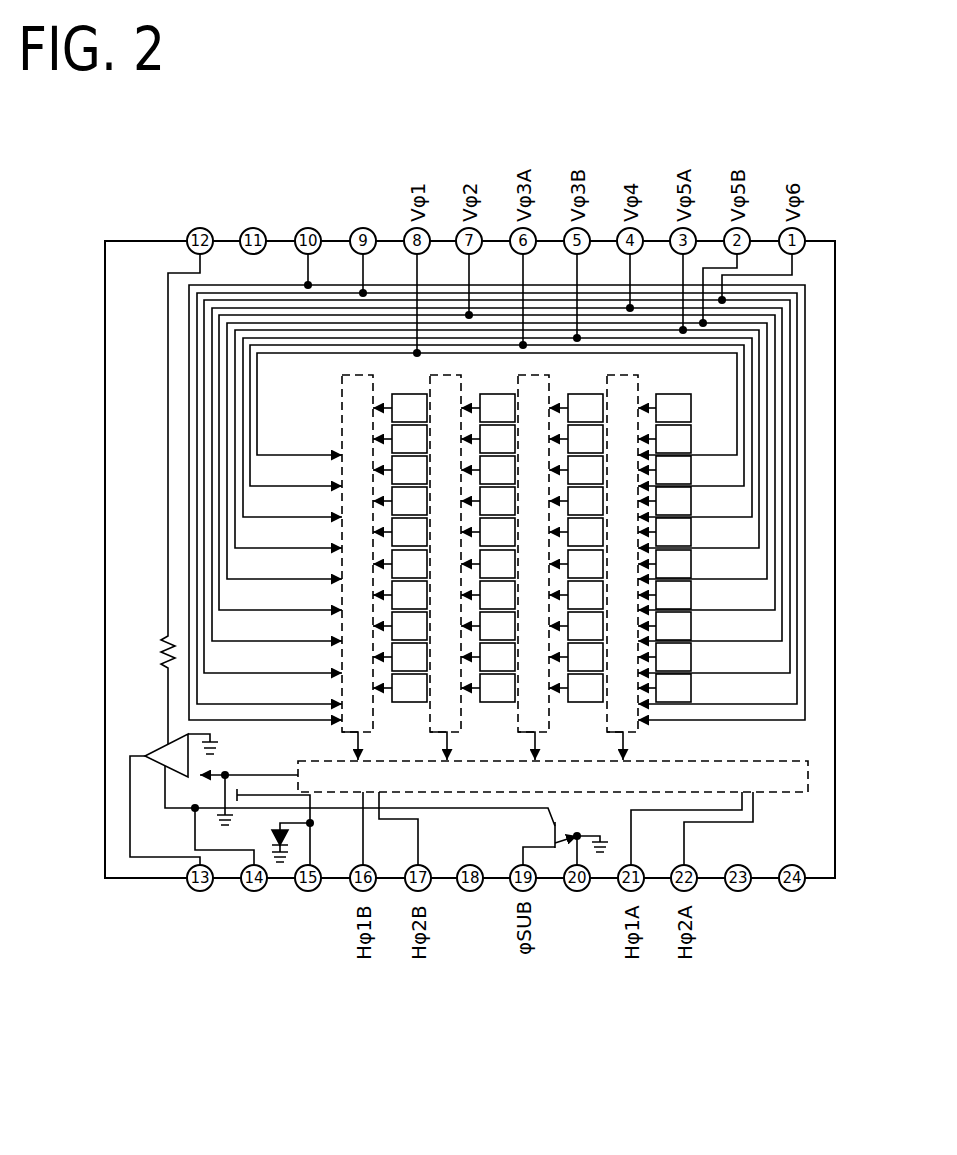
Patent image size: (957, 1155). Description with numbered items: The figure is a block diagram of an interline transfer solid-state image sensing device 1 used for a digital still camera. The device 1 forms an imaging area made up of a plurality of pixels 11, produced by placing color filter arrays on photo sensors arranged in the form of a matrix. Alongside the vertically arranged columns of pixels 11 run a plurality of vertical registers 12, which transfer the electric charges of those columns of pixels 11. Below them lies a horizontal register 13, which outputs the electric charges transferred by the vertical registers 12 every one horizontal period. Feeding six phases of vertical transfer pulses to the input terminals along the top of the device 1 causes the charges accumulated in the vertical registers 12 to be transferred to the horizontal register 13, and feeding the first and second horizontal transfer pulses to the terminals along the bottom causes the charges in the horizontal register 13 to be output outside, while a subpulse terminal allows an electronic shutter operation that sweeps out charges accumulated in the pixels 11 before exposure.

The solid-state image sensing device 1 is at (838, 515).
The pixel 11 is at (691, 626).
The vertical register 12 is at (340, 405).
The horizontal register 13 is at (706, 760).